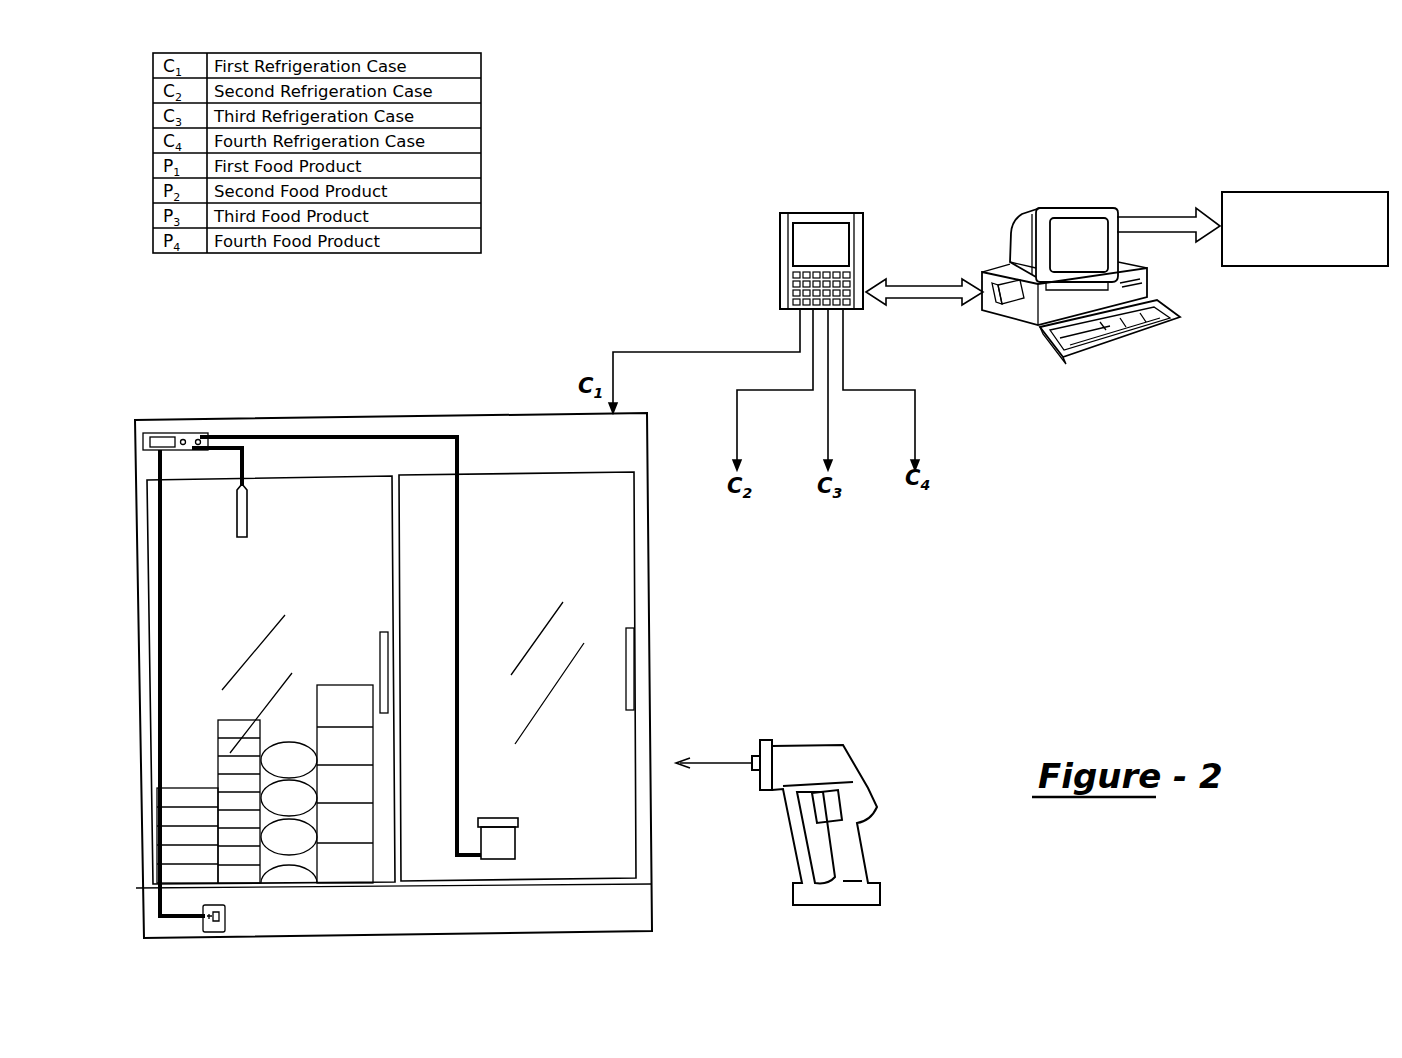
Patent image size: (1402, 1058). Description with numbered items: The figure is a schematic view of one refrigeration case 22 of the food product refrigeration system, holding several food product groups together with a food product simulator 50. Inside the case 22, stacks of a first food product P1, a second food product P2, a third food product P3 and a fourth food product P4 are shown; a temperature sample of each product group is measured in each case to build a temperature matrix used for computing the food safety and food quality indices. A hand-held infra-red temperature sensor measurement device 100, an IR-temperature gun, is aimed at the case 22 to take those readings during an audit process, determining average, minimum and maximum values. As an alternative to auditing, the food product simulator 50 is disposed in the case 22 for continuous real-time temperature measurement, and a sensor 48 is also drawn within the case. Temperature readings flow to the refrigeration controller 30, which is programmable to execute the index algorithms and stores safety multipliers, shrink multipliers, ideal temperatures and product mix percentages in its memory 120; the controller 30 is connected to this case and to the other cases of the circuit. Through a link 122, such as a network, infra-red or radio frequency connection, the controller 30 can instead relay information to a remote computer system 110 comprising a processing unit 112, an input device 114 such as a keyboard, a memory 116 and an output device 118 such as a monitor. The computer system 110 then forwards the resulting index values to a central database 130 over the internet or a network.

The refrigeration case 22 is at (435, 675).
The refrigeration controller 30 is at (773, 203).
The temperature sensor 48 is at (162, 509).
The food product simulator 50 is at (533, 815).
The hand-held infra-red temperature sensor measurement device 100 is at (801, 754).
The remote computer system 110 is at (1117, 233).
The processing unit 112 is at (1126, 293).
The input device 114 is at (1164, 345).
The memory 116 is at (985, 325).
The output device 118 is at (1097, 225).
The memory 120 is at (766, 241).
The link 122 is at (924, 223).
The central database 130 is at (1305, 186).
The first food product P1 is at (187, 793).
The second food product P2 is at (236, 760).
The third food product P3 is at (289, 788).
The fourth food product P4 is at (345, 755).